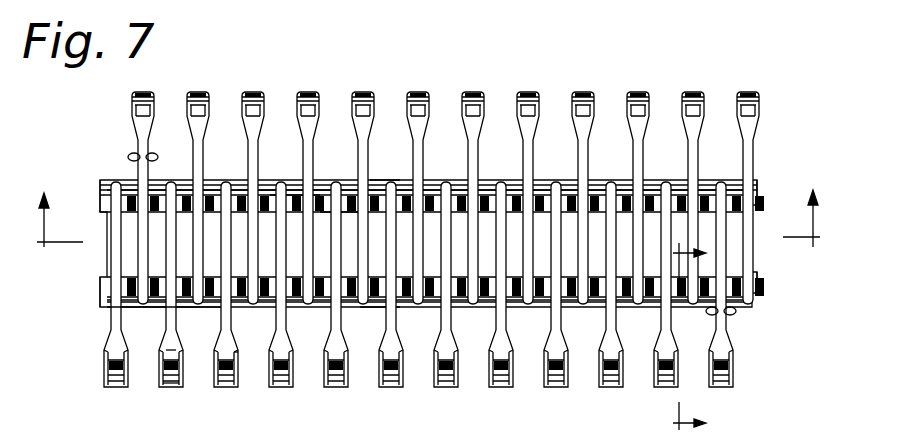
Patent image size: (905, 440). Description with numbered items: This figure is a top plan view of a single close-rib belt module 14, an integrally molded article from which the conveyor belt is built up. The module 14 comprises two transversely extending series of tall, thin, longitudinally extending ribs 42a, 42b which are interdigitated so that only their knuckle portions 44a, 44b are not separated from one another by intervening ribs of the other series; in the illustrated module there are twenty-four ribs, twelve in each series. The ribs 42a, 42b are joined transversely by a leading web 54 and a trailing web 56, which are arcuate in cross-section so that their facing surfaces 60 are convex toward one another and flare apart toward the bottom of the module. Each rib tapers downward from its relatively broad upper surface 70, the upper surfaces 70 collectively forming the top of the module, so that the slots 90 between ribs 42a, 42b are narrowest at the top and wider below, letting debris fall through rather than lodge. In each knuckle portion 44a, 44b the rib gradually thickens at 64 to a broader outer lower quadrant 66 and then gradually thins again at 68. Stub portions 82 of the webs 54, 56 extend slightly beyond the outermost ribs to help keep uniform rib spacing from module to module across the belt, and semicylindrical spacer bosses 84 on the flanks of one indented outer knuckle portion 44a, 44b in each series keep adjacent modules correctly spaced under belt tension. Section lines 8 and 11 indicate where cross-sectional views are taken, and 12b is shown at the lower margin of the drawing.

The section line 8- 8 is at (428, 233).
The section line 11- 11 is at (678, 338).
The lower connector portion 12b is at (153, 373).
The close-rib belt module 14 is at (72, 356).
The web-like ribs of first series 42a is at (192, 178).
The web-like ribs of second series 42b is at (107, 308).
The knuckle portions of first-series ribs 44a is at (137, 92).
The knuckle portions of second-series ribs 44b is at (112, 388).
The leading web 54 is at (243, 181).
The trailing web 56 is at (212, 308).
The facing surfaces of the webs 60 is at (378, 180).
The gradual thickness increase of rib 64 is at (181, 384).
The broader outer lower quadrant 66 is at (237, 382).
The gradual thickness decrease of rib 68 is at (178, 355).
The upper surfaces of ribs 70 is at (306, 184).
The web stub portions 82 is at (757, 184).
The spacer bosses 84 is at (131, 153).
The slots between ribs 90 is at (352, 216).